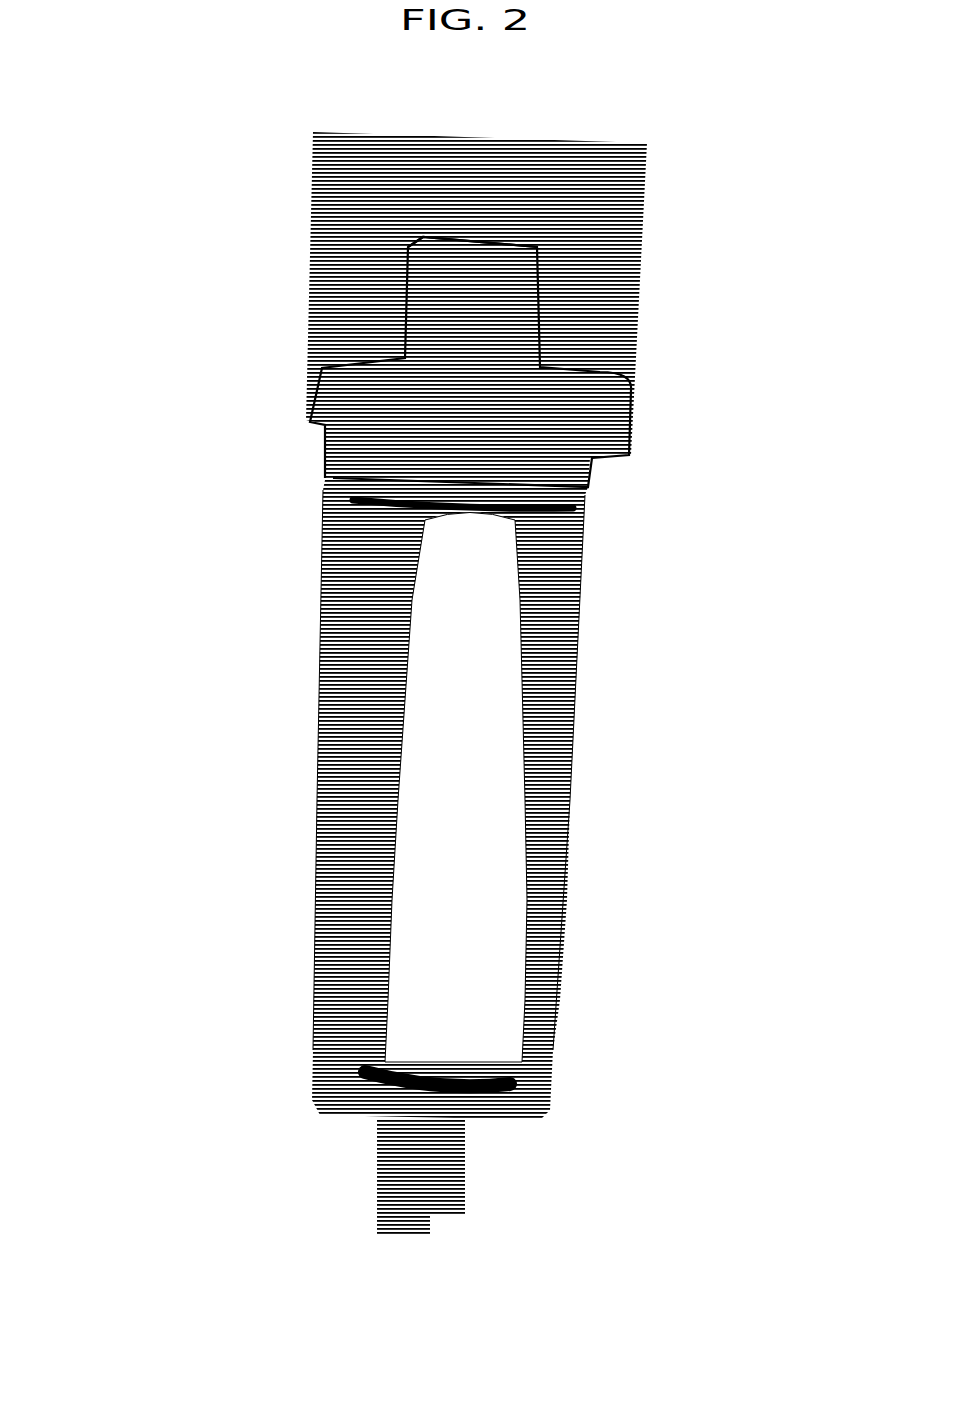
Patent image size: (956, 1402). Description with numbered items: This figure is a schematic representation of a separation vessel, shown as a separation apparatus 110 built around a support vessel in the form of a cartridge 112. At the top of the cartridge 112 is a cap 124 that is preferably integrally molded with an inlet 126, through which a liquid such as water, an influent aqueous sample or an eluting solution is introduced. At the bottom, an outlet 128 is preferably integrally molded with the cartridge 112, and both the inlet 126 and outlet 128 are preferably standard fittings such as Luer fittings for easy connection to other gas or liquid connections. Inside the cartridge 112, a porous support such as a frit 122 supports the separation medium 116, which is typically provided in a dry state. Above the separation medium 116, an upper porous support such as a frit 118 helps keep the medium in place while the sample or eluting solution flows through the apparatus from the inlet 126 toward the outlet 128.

The separation apparatus 110 is at (640, 767).
The cartridge 112 is at (585, 568).
The separation medium 116 is at (458, 815).
The upper porous support (frit) 118 is at (355, 500).
The porous support (frit) 122 is at (362, 1075).
The cap 124 is at (632, 415).
The inlet 126 is at (492, 236).
The outlet 128 is at (428, 1257).